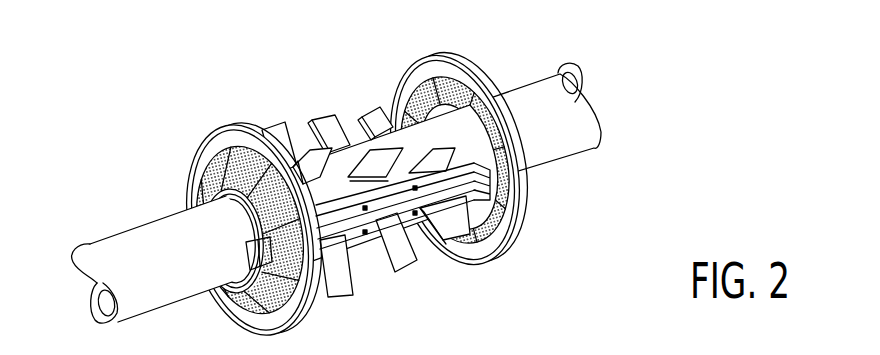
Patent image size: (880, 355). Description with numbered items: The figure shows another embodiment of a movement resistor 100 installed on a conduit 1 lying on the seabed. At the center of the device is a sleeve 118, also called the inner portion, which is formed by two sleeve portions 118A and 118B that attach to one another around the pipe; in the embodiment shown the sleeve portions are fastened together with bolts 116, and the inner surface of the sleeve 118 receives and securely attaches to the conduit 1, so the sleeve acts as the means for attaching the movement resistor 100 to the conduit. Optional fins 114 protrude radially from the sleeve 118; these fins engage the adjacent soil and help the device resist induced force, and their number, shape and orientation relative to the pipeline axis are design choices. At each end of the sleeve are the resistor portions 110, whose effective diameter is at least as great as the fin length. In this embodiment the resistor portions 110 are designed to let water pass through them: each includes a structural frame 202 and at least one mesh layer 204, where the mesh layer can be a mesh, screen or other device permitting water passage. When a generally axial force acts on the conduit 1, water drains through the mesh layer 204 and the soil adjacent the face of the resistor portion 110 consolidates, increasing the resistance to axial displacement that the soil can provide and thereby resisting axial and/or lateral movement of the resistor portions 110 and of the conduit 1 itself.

The conduit 1 is at (168, 276).
The movement resistor 100 is at (344, 174).
The resistor portions 110 is at (461, 139).
The fins 114 is at (345, 158).
The bolts 116 is at (563, 216).
The sleeve 118 is at (365, 155).
The sleeve portion 118A is at (347, 160).
The sleeve portion 118B is at (368, 262).
The structural frame 202 is at (452, 108).
The mesh layer 204 is at (193, 188).